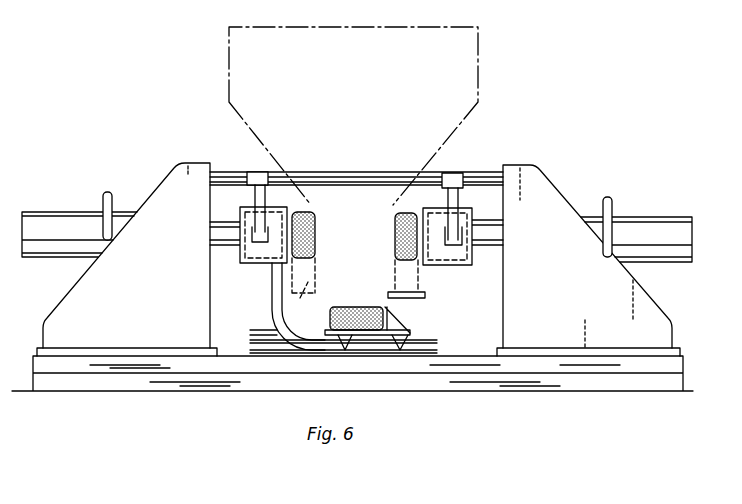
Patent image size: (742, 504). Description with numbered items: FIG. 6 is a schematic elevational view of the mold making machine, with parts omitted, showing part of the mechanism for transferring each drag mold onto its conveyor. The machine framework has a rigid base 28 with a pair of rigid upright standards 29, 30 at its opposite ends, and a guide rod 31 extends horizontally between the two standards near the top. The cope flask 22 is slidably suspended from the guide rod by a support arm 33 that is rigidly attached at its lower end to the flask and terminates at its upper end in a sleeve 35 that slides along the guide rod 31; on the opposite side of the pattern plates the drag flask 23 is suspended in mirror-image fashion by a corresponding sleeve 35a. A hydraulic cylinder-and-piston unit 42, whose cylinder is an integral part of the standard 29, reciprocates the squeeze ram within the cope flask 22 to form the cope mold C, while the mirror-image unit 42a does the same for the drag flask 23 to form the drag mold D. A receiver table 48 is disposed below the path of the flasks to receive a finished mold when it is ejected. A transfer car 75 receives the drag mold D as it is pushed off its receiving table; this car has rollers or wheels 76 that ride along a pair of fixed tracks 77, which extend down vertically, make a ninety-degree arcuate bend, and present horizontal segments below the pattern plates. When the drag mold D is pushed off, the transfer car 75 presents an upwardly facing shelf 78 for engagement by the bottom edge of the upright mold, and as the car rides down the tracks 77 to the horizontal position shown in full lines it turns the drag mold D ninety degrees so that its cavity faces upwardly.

The cope flask 22 is at (462, 266).
The drag flask 23 is at (247, 264).
The base 28 is at (513, 368).
The standard 29 is at (540, 182).
The standard 30 is at (172, 190).
The guide rod 31 is at (386, 152).
The support arm 33 is at (460, 200).
The sleeve 35 is at (458, 172).
The sleeve 35a is at (252, 172).
The hydraulic cylinder-and-piston unit 42 is at (493, 250).
The hydraulic cylinder-and-piston unit 42a is at (213, 246).
The receiver table 48 is at (422, 298).
The transfer car 75 is at (327, 340).
The rollers or wheels 76 is at (357, 348).
The fixed tracks 77 is at (282, 328).
The shelf 78 is at (318, 293).
The cope mold C is at (395, 232).
The drag mold D is at (316, 234).